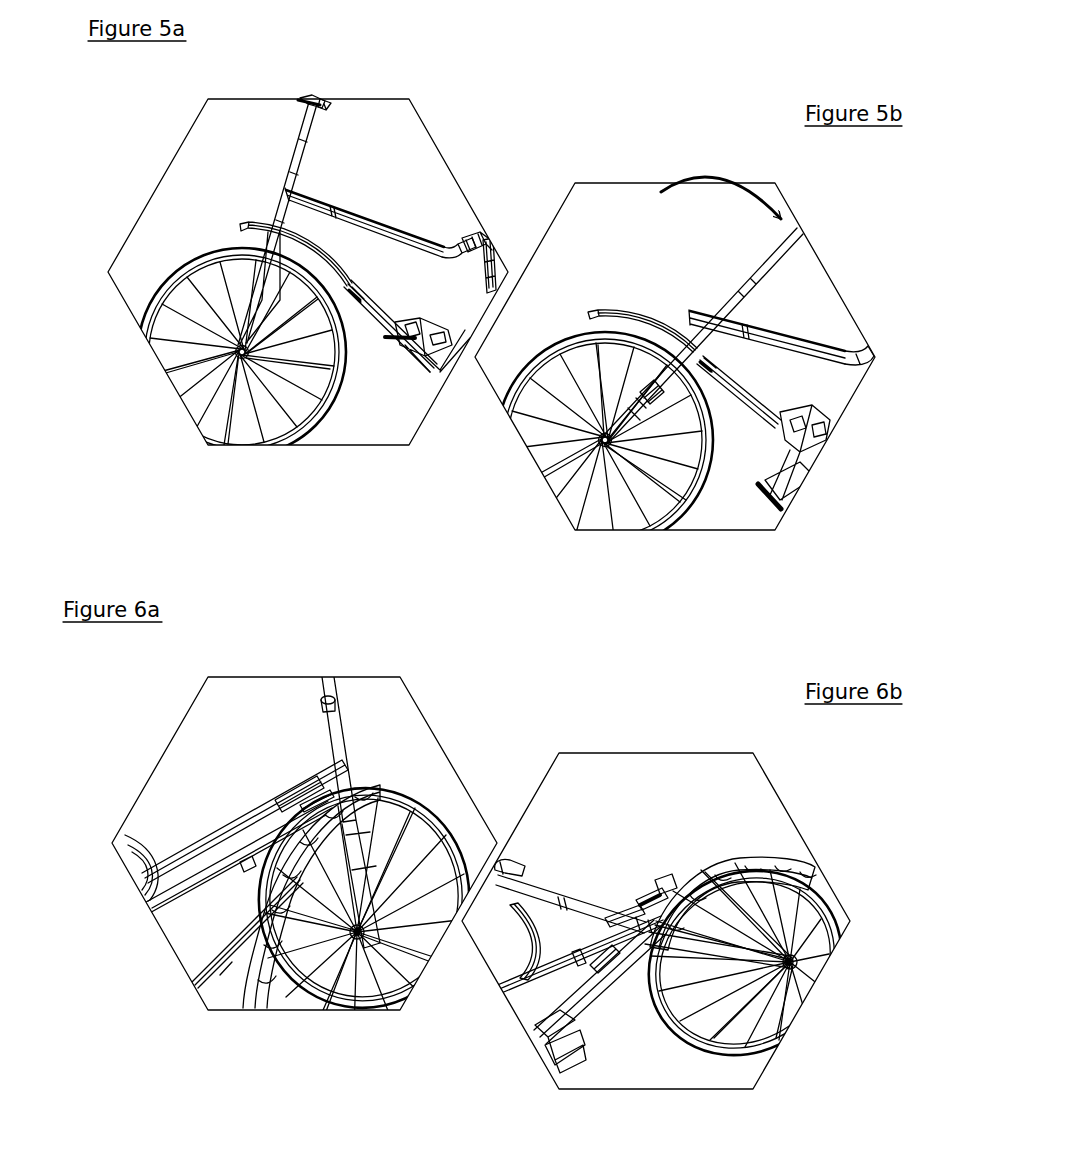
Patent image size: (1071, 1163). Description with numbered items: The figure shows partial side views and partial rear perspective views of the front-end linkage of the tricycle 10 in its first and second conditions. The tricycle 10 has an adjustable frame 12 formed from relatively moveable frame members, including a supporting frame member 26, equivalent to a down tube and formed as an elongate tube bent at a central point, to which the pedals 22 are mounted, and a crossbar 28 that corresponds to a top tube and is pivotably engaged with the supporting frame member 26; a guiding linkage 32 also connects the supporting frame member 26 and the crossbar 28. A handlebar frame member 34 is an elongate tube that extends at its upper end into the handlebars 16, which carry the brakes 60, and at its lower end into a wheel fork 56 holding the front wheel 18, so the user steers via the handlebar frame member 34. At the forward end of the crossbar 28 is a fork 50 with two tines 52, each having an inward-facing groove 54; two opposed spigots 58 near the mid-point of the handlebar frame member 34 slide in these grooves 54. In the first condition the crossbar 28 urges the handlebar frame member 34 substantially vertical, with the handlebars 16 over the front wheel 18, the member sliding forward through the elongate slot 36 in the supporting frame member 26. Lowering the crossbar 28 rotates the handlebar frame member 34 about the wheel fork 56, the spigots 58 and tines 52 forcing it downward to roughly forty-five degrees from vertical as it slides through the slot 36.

In FIG. 5A, the tricycle 10 is at (130, 170).
In FIG. 5B, the tricycle 10 is at (878, 268).
In FIG. 6A, the tricycle 10 is at (95, 778).
In FIG. 6B, the tricycle 10 is at (835, 790).
In FIG. 5A, the adjustable frame 12 is at (388, 182).
In FIG. 5B, the adjustable frame 12 is at (630, 250).
In FIG. 6A, the adjustable frame 12 is at (200, 754).
In FIG. 6B, the adjustable frame 12 is at (665, 790).
In FIG. 5A, the handlebars 16 is at (326, 103).
In FIG. 6B, the handlebars 16 is at (510, 858).
In FIG. 5A, the front wheel 18 is at (170, 357).
In FIG. 5B, the front wheel 18 is at (574, 487).
In FIG. 6A, the front wheel 18 is at (355, 983).
In FIG. 6B, the front wheel 18 is at (772, 1052).
In FIG. 5A, the pedals 22 is at (432, 390).
In FIG. 5B, the pedals 22 is at (790, 482).
In FIG. 5A, the supporting frame member 26 is at (345, 296).
In FIG. 5B, the supporting frame member 26 is at (738, 390).
In FIG. 6A, the supporting frame member 26 is at (200, 952).
In FIG. 6B, the supporting frame member 26 is at (612, 1010).
In FIG. 5A, the crossbar 28 is at (432, 233).
In FIG. 5B, the crossbar 28 is at (853, 345).
In FIG. 6A, the crossbar 28 is at (155, 910).
In FIG. 6B, the crossbar 28 is at (497, 990).
In FIG. 5A, the guiding linkage 32 is at (492, 260).
In FIG. 5A, the handlebar frame member 34 is at (298, 172).
In FIG. 5B, the handlebar frame member 34 is at (765, 258).
In FIG. 6A, the handlebar frame member 34 is at (334, 692).
In FIG. 6B, the handlebar frame member 34 is at (566, 900).
In FIG. 5A, the elongate slot 36 is at (248, 228).
In FIG. 5B, the elongate slot 36 is at (620, 302).
In FIG. 6A, the elongate slot 36 is at (273, 967).
In FIG. 6B, the elongate slot 36 is at (785, 918).
In FIG. 5A, the fork 50 is at (324, 198).
In FIG. 5B, the fork 50 is at (745, 322).
In FIG. 6A, the fork 50 is at (323, 758).
In FIG. 6B, the fork 50 is at (524, 944).
In FIG. 6A, the tines 52 is at (272, 795).
In FIG. 6B, the tines 52 is at (647, 895).
In FIG. 6A, the groove 54 is at (296, 796).
In FIG. 6B, the groove 54 is at (614, 912).
In FIG. 5A, the wheel fork 56 is at (254, 290).
In FIG. 5B, the wheel fork 56 is at (652, 372).
In FIG. 6A, the wheel fork 56 is at (403, 797).
In FIG. 6B, the wheel fork 56 is at (716, 1058).
In FIG. 6B, the spigots 58 is at (608, 944).
In FIG. 5A, the brakes 60 is at (306, 96).
In FIG. 6A, the brakes 60 is at (338, 780).